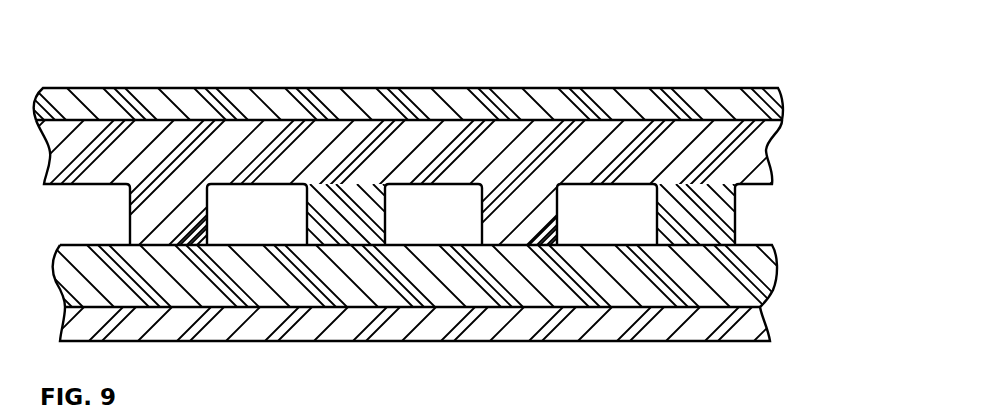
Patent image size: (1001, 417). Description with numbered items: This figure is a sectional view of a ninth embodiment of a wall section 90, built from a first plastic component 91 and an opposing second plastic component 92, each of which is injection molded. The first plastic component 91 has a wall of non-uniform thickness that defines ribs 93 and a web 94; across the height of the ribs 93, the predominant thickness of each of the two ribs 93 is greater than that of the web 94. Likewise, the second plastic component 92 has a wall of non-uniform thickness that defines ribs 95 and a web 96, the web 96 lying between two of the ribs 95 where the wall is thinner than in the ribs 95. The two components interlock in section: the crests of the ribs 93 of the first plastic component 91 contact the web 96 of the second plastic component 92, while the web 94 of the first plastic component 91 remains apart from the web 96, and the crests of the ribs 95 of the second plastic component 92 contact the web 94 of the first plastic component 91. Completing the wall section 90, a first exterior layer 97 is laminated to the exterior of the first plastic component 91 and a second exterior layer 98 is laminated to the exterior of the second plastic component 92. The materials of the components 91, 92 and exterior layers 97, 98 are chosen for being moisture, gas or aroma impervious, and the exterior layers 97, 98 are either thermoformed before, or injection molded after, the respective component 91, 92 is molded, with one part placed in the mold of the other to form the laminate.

The wall section 90 is at (52, 88).
The first exterior layer 97 is at (778, 100).
The first plastic component 91 is at (770, 167).
The ribs 93 is at (130, 227).
The web 94 is at (282, 185).
The ribs 95 is at (306, 218).
The web 96 is at (450, 245).
The second plastic component 92 is at (772, 248).
The second exterior layer 98 is at (763, 325).